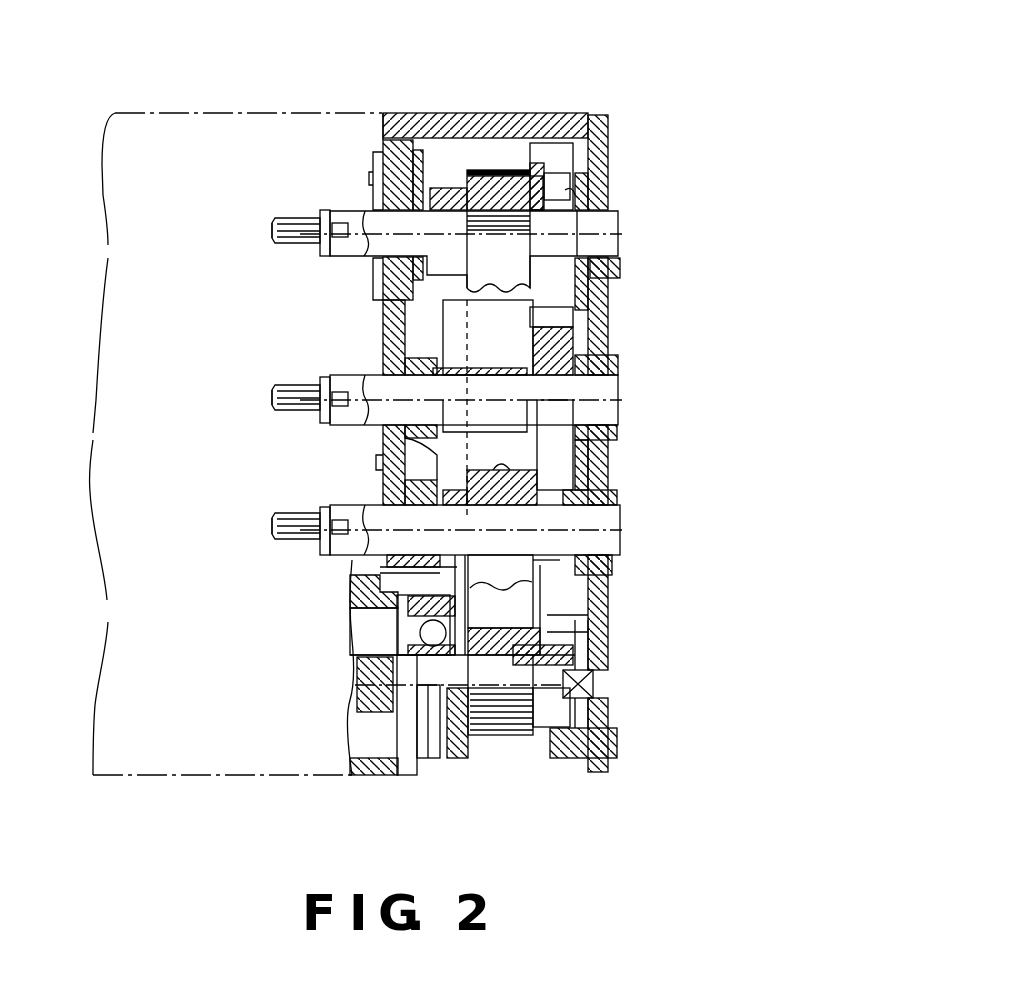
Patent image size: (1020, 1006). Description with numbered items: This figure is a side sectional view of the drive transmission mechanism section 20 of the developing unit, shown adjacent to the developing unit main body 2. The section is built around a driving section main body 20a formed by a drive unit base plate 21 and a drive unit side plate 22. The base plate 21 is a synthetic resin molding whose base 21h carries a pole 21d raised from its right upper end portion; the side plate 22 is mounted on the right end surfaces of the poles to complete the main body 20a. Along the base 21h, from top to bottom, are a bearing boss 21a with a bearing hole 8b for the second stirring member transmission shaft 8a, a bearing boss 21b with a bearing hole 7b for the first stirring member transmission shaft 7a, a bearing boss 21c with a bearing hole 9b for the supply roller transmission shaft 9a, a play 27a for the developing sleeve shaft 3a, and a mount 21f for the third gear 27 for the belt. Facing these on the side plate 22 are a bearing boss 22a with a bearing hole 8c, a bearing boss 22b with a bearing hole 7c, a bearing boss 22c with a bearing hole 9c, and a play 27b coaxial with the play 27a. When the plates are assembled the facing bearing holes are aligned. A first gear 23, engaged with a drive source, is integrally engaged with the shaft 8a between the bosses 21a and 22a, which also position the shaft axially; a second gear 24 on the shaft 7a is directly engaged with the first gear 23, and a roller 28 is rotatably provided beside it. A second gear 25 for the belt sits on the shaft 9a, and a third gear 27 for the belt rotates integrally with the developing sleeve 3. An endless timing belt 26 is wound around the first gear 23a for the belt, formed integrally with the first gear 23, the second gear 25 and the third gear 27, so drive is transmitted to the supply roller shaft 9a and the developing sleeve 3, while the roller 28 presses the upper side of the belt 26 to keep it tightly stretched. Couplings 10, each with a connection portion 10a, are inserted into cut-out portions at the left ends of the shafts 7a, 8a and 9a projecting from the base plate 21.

The developing unit main body 2 is at (150, 113).
The developing sleeve 3 is at (372, 765).
The developing sleeve shaft 3a is at (496, 730).
The first stirring member transmission shaft 7a is at (328, 420).
The bearing hole 7b is at (365, 426).
The bearing hole 7c is at (610, 432).
The second stirring member transmission shaft 8a is at (328, 256).
The bearing hole 8b is at (365, 260).
The bearing hole 8c is at (620, 268).
The supply roller transmission shaft 9a is at (328, 549).
The bearing hole 9b is at (365, 557).
The bearing hole 9c is at (610, 496).
The coupling 10 is at (272, 231).
The connection portion 10a is at (300, 218).
The drive transmission mechanism section 20 is at (632, 76).
The driving section main body 20a is at (437, 158).
The drive unit base plate 21 is at (385, 150).
The bearing boss 21a is at (372, 180).
The bearing boss 21b is at (386, 333).
The bearing boss 21c is at (386, 466).
The pole 21d is at (527, 113).
The mount 21f is at (450, 762).
The base 21h is at (383, 138).
The drive unit side plate 22 is at (600, 117).
The bearing boss 22a is at (595, 193).
The bearing boss 22b is at (600, 362).
The bearing boss 22c is at (605, 576).
The first gear 23 is at (573, 150).
The first gear for the belt 23a is at (480, 170).
The second gear 24 is at (550, 448).
The second gear for the belt 25 is at (540, 520).
The endless timing belt 26 is at (498, 290).
The third gear for the belt 27 is at (520, 730).
The play 27a is at (617, 740).
The play 27b is at (600, 686).
The roller 28 is at (477, 363).